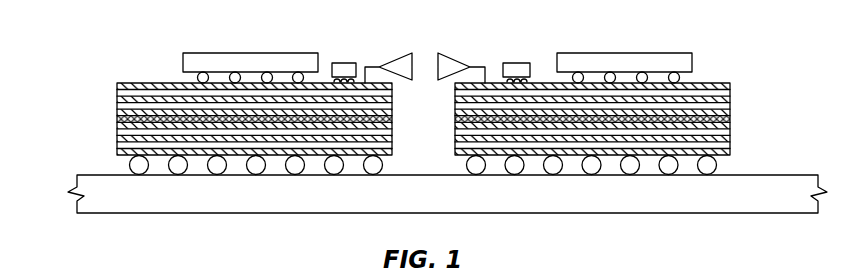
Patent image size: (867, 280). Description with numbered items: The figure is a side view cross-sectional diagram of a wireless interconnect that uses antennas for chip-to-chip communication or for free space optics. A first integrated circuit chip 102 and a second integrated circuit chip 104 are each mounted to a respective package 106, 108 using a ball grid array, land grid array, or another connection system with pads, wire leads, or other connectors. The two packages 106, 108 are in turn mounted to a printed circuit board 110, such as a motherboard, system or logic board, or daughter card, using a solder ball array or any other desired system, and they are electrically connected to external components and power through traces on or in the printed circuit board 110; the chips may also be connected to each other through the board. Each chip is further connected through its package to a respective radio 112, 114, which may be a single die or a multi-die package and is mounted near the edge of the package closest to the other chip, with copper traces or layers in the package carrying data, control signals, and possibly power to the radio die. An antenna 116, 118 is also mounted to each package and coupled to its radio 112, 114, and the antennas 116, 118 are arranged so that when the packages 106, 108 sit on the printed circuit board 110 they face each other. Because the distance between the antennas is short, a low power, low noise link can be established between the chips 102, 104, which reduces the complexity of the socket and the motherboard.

The first integrated circuit chip 102 is at (205, 53).
The second integrated circuit chip 104 is at (682, 53).
The first package 106 is at (140, 83).
The second package 108 is at (730, 83).
The printed circuit board 110 is at (802, 175).
The first radio 112 is at (346, 63).
The second radio 114 is at (516, 63).
The first antenna 116 is at (392, 60).
The second antenna 118 is at (455, 60).